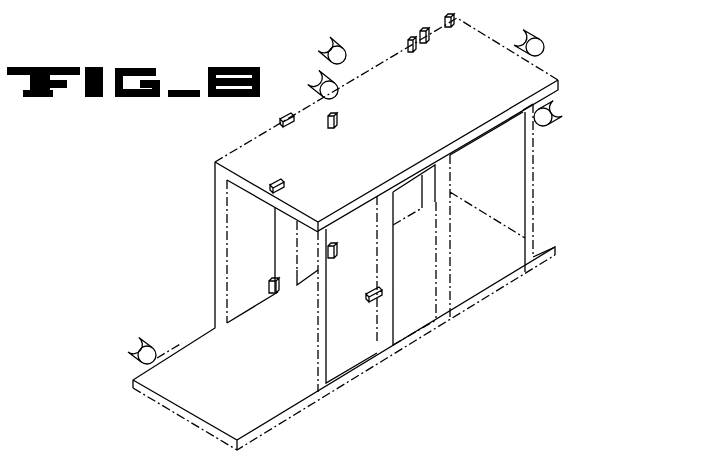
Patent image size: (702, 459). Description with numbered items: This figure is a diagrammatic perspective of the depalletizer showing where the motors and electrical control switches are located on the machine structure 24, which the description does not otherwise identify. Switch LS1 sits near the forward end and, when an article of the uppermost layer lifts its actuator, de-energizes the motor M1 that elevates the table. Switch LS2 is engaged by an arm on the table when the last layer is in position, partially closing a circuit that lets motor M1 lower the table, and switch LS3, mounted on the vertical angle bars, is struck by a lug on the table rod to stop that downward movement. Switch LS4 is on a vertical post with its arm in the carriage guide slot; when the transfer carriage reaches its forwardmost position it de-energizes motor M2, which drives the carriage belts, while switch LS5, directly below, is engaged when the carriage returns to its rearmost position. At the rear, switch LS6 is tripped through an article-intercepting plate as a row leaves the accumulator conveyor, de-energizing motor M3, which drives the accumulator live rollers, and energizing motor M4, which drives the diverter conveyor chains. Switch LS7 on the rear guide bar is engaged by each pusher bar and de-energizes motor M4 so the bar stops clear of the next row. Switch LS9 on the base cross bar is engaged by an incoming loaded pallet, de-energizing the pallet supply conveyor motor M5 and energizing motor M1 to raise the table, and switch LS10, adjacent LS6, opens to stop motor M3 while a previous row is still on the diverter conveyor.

The machine frame 24 is at (218, 156).
The switch LS1 is at (284, 188).
The switch LS2 is at (280, 119).
The switch LS3 is at (271, 279).
The switch LS4 is at (338, 119).
The switch LS5 is at (357, 267).
The switch LS6 is at (423, 28).
The switch LS7 is at (455, 19).
The switch LS9 is at (371, 302).
The switch LS10 is at (409, 41).
The motor M1 is at (312, 73).
The motor M2 is at (320, 41).
The motor M3 is at (546, 34).
The motor M4 is at (563, 108).
The motor M5 is at (139, 339).